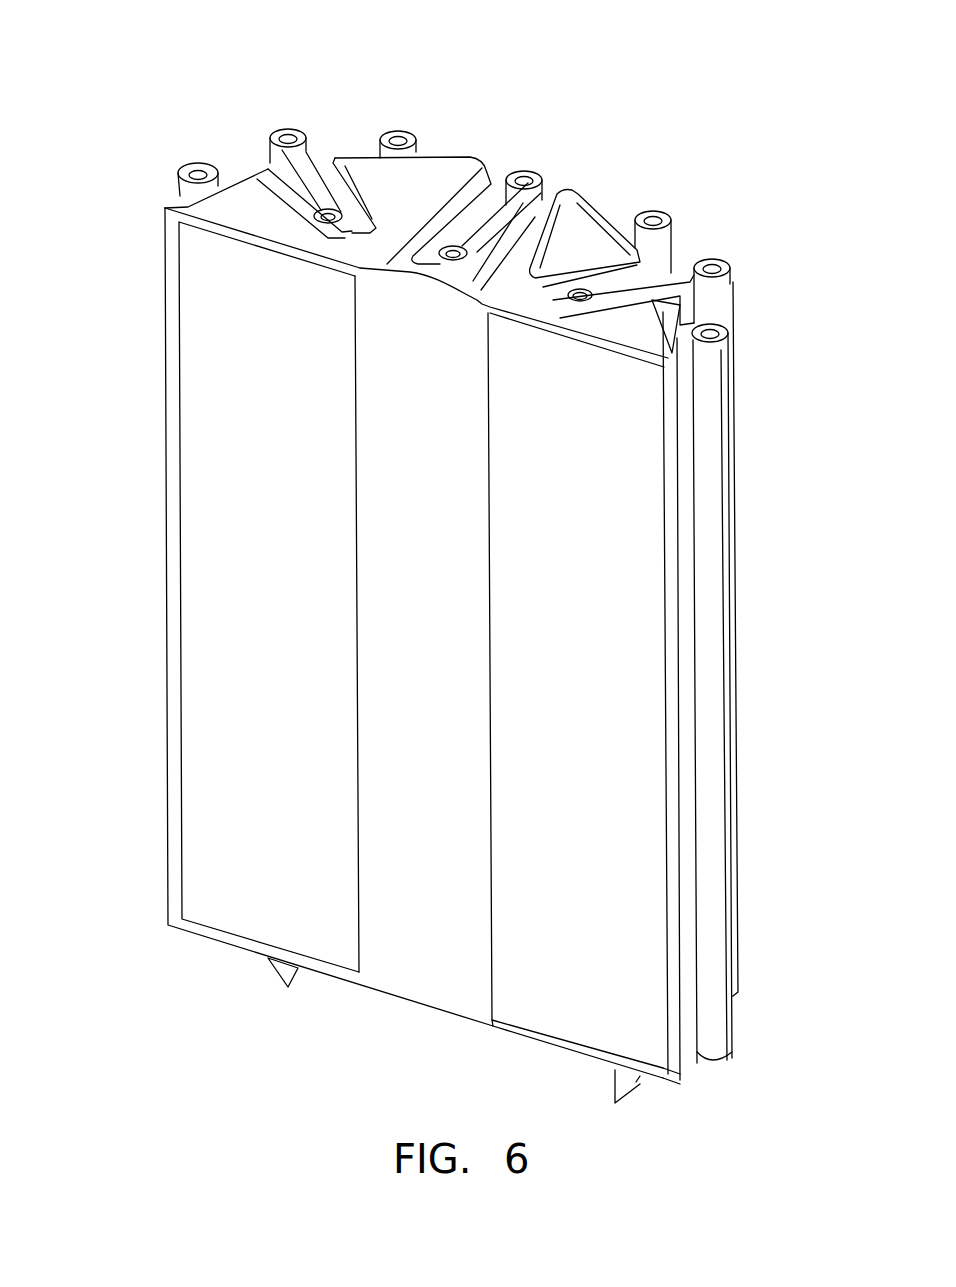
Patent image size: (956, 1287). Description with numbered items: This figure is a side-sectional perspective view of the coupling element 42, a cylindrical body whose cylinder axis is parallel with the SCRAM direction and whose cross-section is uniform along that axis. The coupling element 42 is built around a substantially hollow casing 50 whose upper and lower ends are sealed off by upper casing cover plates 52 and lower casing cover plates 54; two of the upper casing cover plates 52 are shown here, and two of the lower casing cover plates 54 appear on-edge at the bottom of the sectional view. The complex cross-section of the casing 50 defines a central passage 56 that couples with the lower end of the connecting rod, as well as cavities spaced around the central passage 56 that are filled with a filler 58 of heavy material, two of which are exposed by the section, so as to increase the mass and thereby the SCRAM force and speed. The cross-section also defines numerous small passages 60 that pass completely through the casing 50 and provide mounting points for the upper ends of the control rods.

The coupling element 42 is at (167, 82).
The hollow casing 50 is at (733, 519).
The upper casing cover plate 52 is at (428, 172).
The lower casing cover plate 54 is at (296, 980).
The central passage 56 is at (429, 357).
The filler 58 is at (278, 493).
The small passage 60 is at (272, 145).